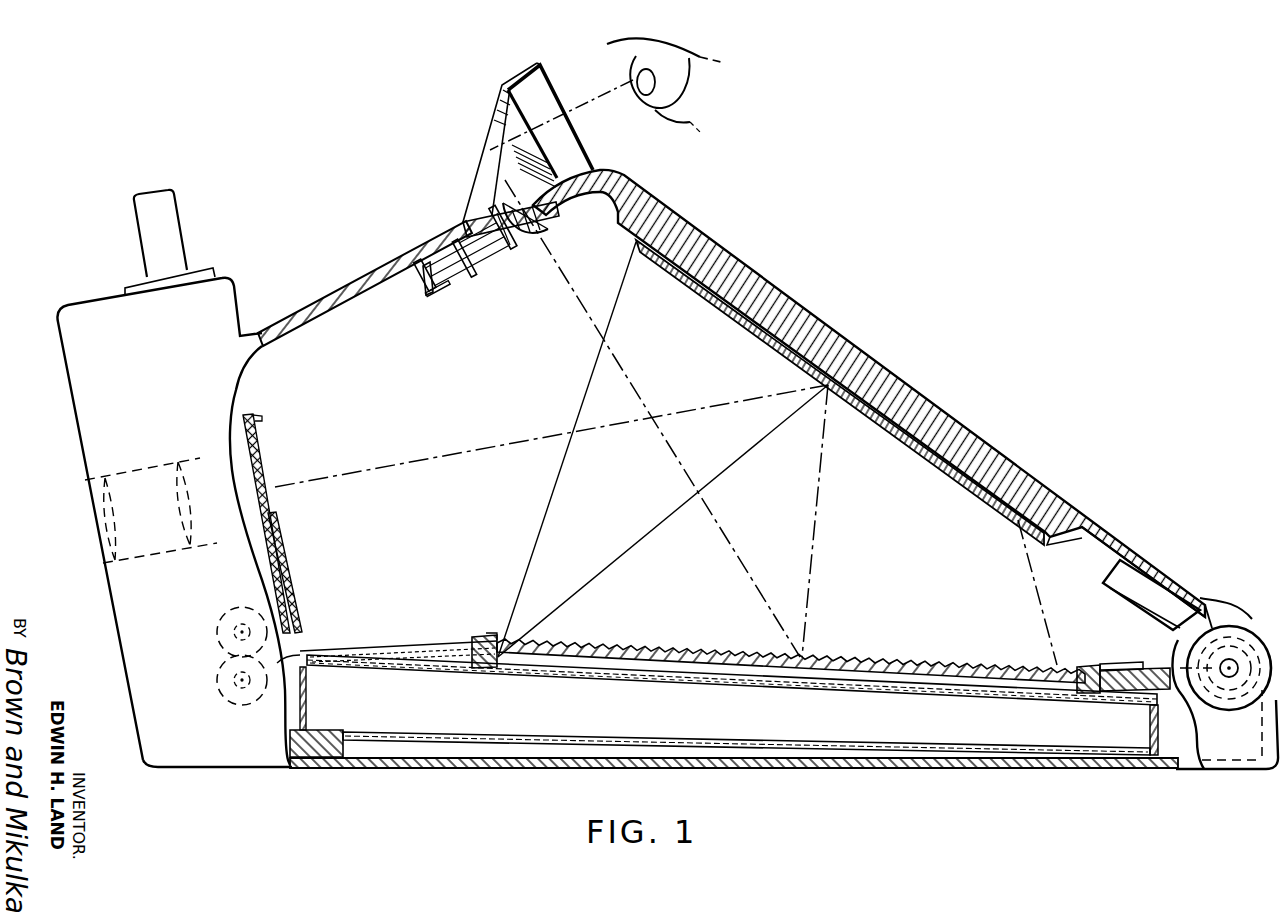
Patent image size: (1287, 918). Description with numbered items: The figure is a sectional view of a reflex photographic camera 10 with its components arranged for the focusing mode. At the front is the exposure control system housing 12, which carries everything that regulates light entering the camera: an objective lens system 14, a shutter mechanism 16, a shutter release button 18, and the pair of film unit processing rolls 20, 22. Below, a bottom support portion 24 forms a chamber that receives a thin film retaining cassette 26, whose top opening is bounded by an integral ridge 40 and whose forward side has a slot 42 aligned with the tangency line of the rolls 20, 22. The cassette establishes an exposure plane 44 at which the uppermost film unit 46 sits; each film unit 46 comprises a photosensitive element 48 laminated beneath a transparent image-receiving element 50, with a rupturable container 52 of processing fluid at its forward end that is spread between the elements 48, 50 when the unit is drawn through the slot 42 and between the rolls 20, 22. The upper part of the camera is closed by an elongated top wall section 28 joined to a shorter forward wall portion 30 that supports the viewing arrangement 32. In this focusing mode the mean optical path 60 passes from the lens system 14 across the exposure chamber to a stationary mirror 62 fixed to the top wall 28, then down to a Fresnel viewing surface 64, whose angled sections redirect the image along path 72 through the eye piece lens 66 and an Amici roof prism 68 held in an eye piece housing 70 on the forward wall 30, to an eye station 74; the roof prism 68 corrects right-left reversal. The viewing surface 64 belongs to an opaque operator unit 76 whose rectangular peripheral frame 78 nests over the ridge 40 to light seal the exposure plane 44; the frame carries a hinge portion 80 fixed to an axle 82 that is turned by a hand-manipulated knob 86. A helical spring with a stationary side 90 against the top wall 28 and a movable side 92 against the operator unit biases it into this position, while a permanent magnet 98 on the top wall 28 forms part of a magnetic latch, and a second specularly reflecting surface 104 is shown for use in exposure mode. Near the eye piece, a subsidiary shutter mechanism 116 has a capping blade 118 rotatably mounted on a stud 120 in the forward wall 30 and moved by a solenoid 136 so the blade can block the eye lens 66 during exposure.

The photographic camera 10 is at (926, 385).
The exposure control system housing 12 is at (57, 337).
The objective lens system 14 is at (132, 478).
The shutter mechanism 16 is at (300, 538).
The shutter release button 18 is at (170, 210).
The film unit processing roll 20 is at (236, 612).
The film unit processing roll 22 is at (228, 666).
The bottom support portion 24 is at (446, 768).
The film retaining cassette 26 is at (1185, 771).
The elongated top wall section 28 is at (978, 436).
The forward wall portion 30 is at (343, 294).
The viewing arrangement 32 is at (483, 149).
The ridge 40 is at (495, 645).
The slot 42 is at (298, 662).
The exposure plane 44 is at (572, 661).
The film unit 46 is at (972, 716).
The photosensitive element 48 is at (646, 678).
The image-receiving element 50 is at (678, 655).
The rupturable container 52 is at (372, 668).
The path line 60 is at (392, 465).
The mirror 62 is at (733, 312).
The viewing surface 64 is at (915, 656).
The eye piece lens 66 is at (546, 216).
The roof prism 68 is at (556, 134).
The eye piece housing 70 is at (528, 76).
The path line 72 is at (578, 108).
The eye station 74 is at (695, 111).
The operator unit 76 is at (1126, 684).
The peripheral frame 78 is at (472, 646).
The hinge portion 80 is at (1183, 704).
The axle 82 is at (1231, 666).
The hand-manipulated knob 86 is at (1240, 710).
The stationary side 90 is at (1210, 608).
The movable side 92 is at (1122, 663).
The permanent magnet 98 is at (1148, 583).
The second specularly reflecting surface 104 is at (842, 660).
The subsidiary shutter mechanism 116 is at (484, 275).
The capping blade 118 is at (520, 253).
The stud 120 is at (462, 223).
The solenoid 136 is at (447, 284).